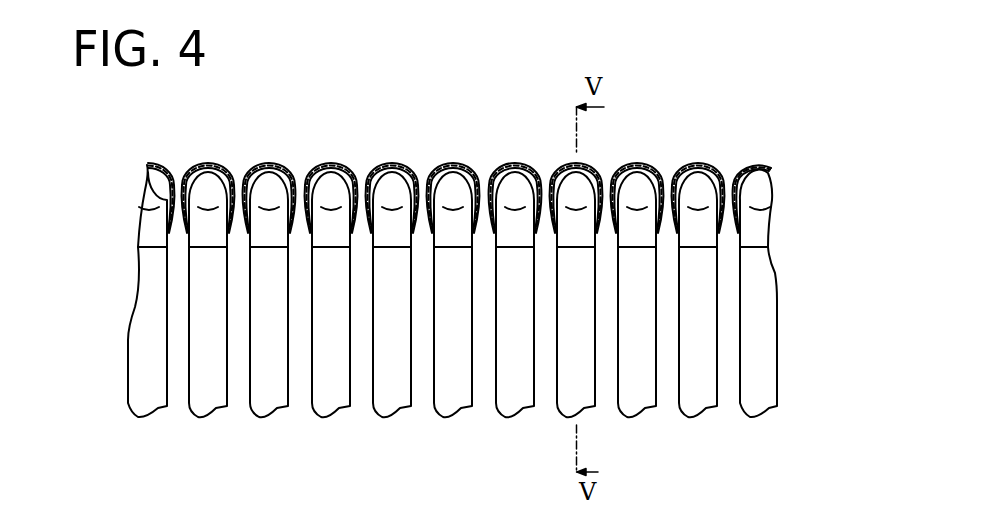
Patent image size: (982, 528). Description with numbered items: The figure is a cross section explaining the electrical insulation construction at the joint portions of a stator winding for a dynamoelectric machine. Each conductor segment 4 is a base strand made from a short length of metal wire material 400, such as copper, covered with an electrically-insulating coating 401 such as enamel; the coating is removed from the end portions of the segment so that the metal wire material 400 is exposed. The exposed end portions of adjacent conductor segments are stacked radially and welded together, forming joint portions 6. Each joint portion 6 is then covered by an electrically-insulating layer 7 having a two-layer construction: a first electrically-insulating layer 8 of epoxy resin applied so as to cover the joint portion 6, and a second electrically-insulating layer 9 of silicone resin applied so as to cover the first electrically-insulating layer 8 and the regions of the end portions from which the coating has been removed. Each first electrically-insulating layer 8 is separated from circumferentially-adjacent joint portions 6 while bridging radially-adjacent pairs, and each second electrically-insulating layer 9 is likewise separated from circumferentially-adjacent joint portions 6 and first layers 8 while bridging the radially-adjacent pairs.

The conductor segment 4 is at (486, 243).
The metal wire material 400 is at (757, 225).
The electrically-insulating coating 401 is at (765, 275).
The joint portion 6 is at (402, 188).
The electrically-insulating layer 7 is at (332, 243).
The first electrically-insulating layer 8 is at (350, 170).
The second electrically-insulating layer 9 is at (317, 167).